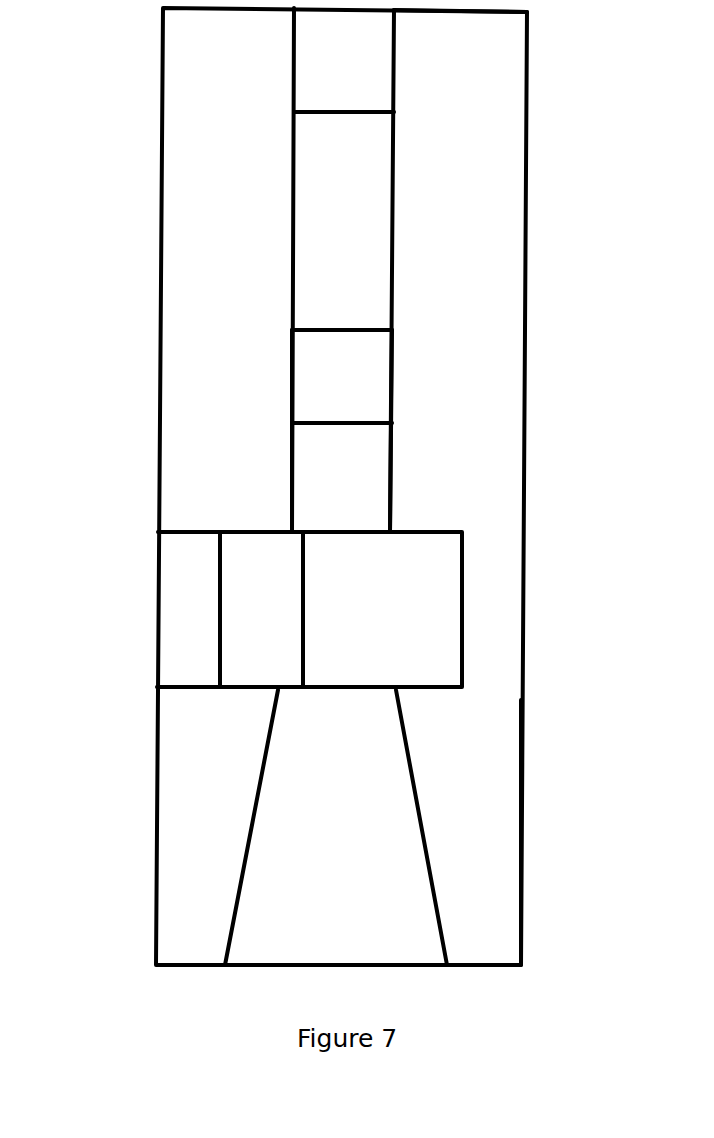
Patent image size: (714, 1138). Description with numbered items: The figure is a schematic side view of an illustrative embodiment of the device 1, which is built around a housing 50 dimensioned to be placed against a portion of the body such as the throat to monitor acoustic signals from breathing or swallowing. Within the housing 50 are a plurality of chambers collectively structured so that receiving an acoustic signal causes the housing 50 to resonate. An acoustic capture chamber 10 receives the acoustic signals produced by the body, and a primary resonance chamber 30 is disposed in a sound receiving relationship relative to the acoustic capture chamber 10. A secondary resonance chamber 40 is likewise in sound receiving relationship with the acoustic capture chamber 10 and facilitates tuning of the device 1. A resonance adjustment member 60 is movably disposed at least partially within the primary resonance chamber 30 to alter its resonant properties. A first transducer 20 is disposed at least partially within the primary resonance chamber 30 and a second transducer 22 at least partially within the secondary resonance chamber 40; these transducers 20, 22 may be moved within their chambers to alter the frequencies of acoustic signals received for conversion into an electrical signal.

The device 1 is at (136, 204).
The acoustic capture chamber 10 is at (275, 806).
The first transducer 20 is at (394, 382).
The second transducer 22 is at (243, 573).
The primary resonance chamber 30 is at (394, 227).
The secondary resonance chamber 40 is at (168, 624).
The housing 50 is at (522, 828).
The resonance adjustment member 60 is at (395, 74).